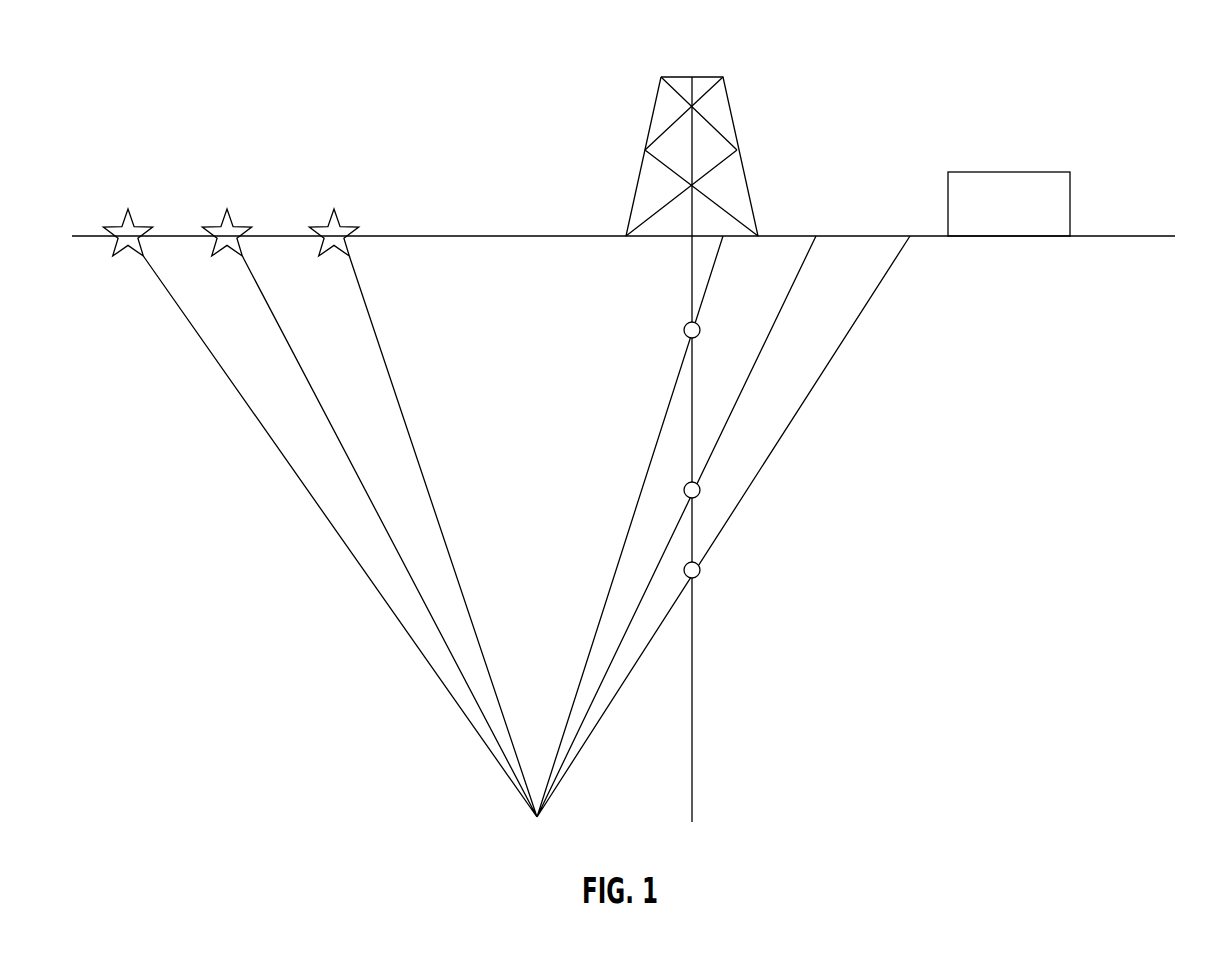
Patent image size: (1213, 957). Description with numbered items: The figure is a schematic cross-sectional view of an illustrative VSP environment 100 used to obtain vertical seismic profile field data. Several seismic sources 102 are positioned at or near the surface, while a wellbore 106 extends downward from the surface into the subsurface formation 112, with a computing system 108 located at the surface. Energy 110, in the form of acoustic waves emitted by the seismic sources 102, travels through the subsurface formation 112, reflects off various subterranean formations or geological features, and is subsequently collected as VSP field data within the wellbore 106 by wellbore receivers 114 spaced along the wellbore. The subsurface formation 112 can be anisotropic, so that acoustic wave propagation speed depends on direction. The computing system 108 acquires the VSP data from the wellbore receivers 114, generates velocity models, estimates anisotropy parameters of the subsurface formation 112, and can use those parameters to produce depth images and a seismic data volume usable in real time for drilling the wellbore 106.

The VSP environment 100 is at (821, 50).
The seismic sources 102 is at (126, 211).
The wellbore 106 is at (693, 688).
The computing system 108 is at (1030, 217).
The energy 110 is at (124, 249).
The subsurface formation 112 is at (927, 499).
The wellbore receivers 114 is at (685, 322).